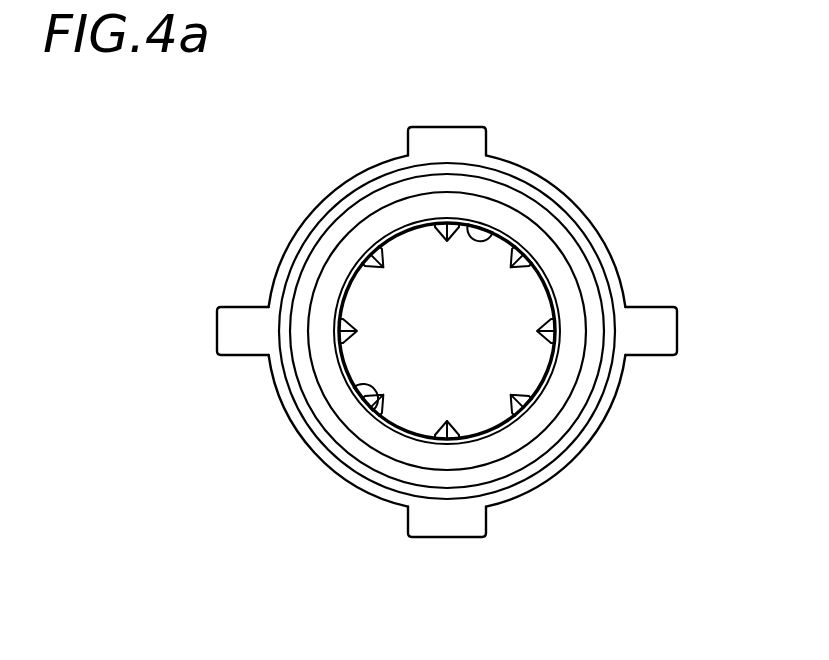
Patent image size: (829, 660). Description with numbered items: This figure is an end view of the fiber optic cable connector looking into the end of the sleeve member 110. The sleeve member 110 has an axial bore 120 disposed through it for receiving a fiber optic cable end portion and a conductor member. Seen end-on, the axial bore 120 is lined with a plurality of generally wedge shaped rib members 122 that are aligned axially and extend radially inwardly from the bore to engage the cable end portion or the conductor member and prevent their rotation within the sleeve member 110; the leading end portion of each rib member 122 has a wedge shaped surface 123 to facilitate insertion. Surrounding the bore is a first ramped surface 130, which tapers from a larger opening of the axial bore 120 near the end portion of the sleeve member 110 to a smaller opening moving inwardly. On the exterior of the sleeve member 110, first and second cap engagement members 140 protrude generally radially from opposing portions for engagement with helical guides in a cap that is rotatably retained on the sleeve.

The sleeve member 110 is at (286, 208).
The axial bore 120 is at (470, 222).
The wedge shaped rib members 122 is at (357, 387).
The wedge shaped surface 123 is at (515, 422).
The first ramped surface 130 is at (538, 248).
The cap engagement members 140 is at (443, 127).